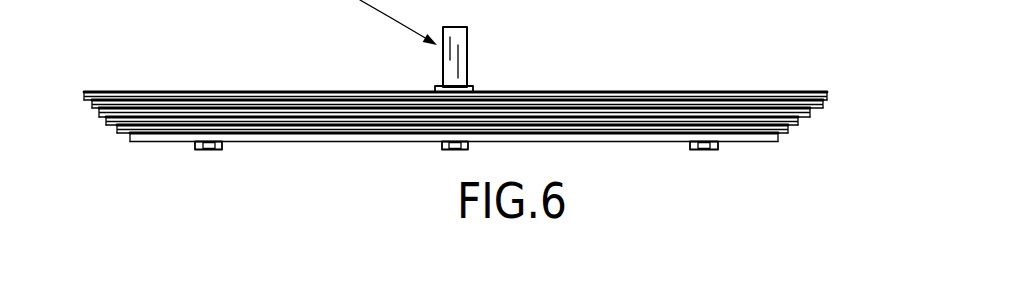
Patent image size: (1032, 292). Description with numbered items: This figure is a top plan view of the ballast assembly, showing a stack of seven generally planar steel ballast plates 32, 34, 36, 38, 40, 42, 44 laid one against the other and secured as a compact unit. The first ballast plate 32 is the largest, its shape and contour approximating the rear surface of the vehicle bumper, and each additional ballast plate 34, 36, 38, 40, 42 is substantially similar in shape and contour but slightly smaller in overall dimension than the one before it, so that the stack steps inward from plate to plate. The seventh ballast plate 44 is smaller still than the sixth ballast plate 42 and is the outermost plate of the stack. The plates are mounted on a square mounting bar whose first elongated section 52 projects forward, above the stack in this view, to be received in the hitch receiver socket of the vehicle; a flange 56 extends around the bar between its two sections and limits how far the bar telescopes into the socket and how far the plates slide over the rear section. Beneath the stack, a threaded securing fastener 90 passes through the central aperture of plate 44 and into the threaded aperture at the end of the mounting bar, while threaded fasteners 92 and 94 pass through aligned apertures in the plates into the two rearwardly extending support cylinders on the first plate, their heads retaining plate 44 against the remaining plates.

The first ballast plate 32 is at (673, 90).
The ballast plate 34 is at (823, 104).
The ballast plate 36 is at (808, 110).
The ballast plate 38 is at (802, 115).
The ballast plate 40 is at (795, 120).
The sixth ballast plate 42 is at (785, 125).
The seventh ballast plate 44 is at (638, 137).
The first elongated section of mounting bar 52 is at (448, 70).
The flange 56 is at (470, 88).
The securing fastener 90 is at (443, 150).
The threaded fastener 92 is at (205, 151).
The fastener 94 is at (715, 150).